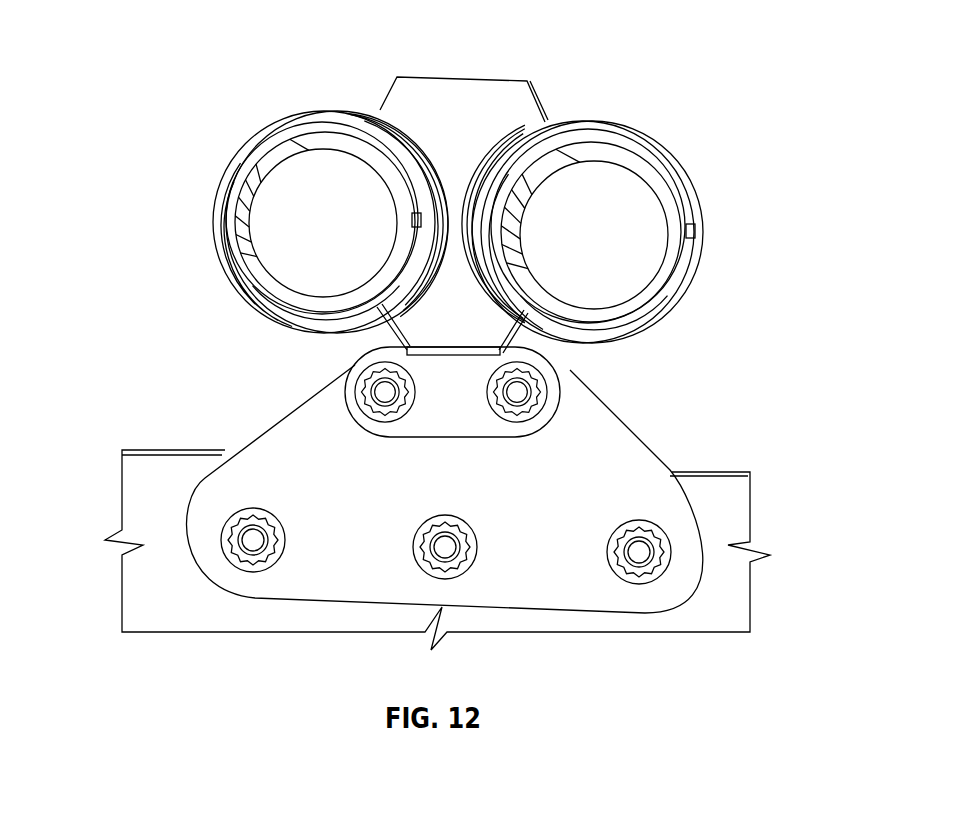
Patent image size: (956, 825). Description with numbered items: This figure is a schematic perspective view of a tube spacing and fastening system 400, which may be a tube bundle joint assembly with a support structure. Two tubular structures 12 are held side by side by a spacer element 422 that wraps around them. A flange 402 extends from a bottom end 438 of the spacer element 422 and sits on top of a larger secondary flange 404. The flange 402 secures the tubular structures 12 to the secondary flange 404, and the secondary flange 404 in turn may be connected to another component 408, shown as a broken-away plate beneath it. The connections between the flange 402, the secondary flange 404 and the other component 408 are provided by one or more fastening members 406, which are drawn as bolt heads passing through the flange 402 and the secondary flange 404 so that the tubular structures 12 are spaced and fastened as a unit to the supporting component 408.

The tubular structures 12 is at (258, 162).
The tube spacing and fastening system 400 is at (682, 125).
The flange 402 is at (463, 418).
The secondary flange 404 is at (618, 432).
The fastening members 406 is at (358, 390).
The another component 408 is at (732, 608).
The spacer element 422 is at (487, 226).
The bottom end 438 is at (447, 353).